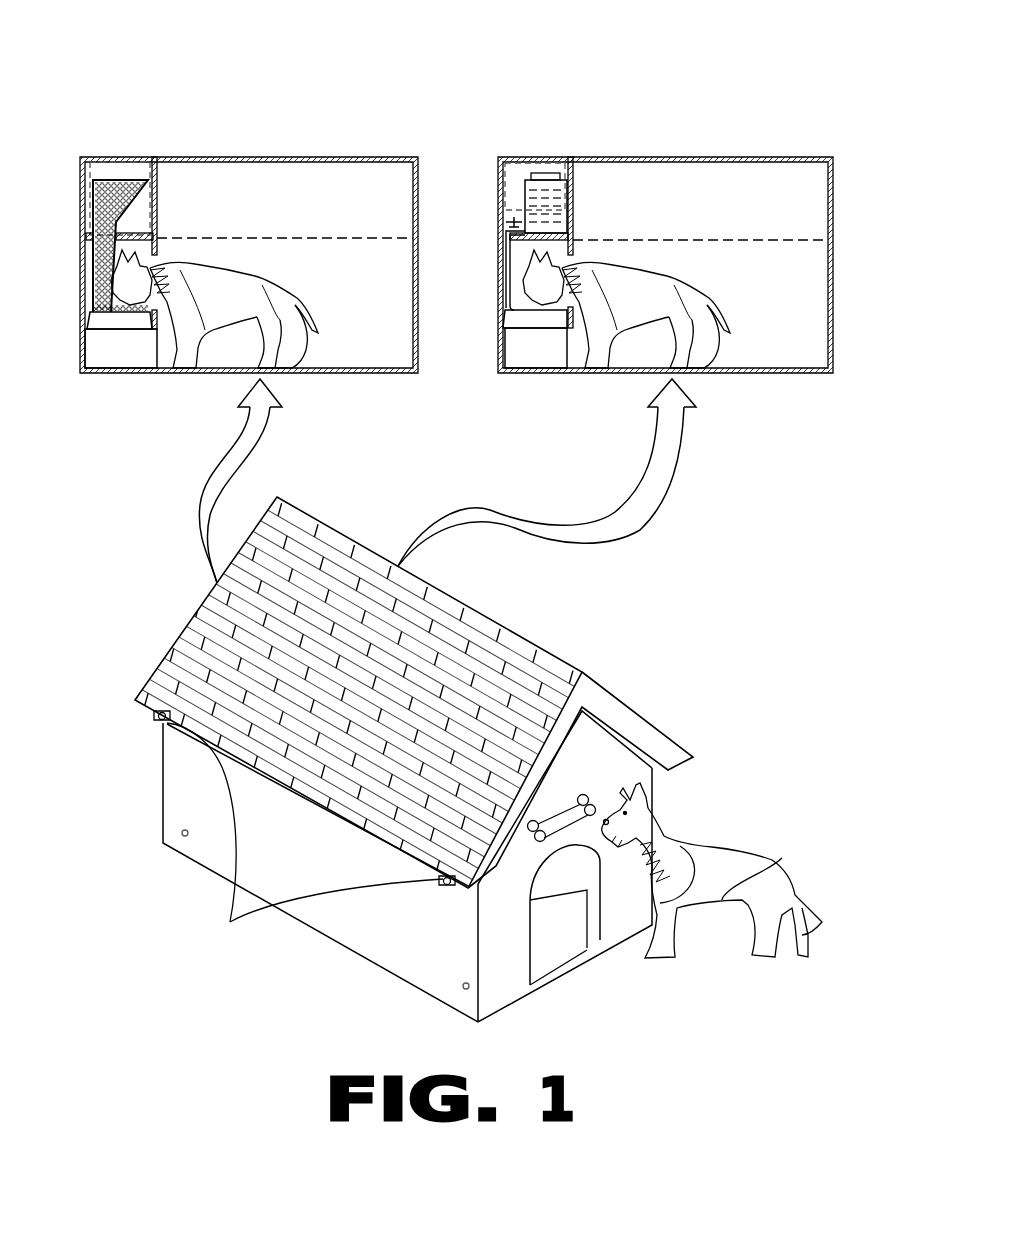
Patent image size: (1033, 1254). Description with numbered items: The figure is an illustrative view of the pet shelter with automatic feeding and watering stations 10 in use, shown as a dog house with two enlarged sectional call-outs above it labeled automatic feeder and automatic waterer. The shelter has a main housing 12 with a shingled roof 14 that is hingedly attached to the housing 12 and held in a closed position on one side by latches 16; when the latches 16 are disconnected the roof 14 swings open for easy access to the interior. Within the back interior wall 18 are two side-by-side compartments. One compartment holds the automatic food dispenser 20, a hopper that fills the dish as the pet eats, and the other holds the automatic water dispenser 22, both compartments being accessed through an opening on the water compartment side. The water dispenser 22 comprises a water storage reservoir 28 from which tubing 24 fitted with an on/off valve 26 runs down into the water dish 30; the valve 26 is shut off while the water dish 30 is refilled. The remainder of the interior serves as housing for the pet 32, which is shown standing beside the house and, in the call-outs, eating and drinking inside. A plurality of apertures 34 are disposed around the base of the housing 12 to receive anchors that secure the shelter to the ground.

The pet shelter with automatic feeding and watering stations 10 is at (738, 107).
The main housing 12 is at (505, 967).
The roof 14 is at (203, 606).
The latches 16 is at (305, 844).
The back interior wall 18 is at (158, 195).
The automatic food dispenser 20 is at (122, 181).
The automatic water dispenser 22 is at (545, 178).
The tubing 24 is at (507, 277).
The on/off valve 26 is at (517, 218).
The water storage reservoir 28 is at (560, 213).
The water dish 30 is at (522, 321).
The pet 32 is at (233, 292).
The apertures 34 is at (180, 833).